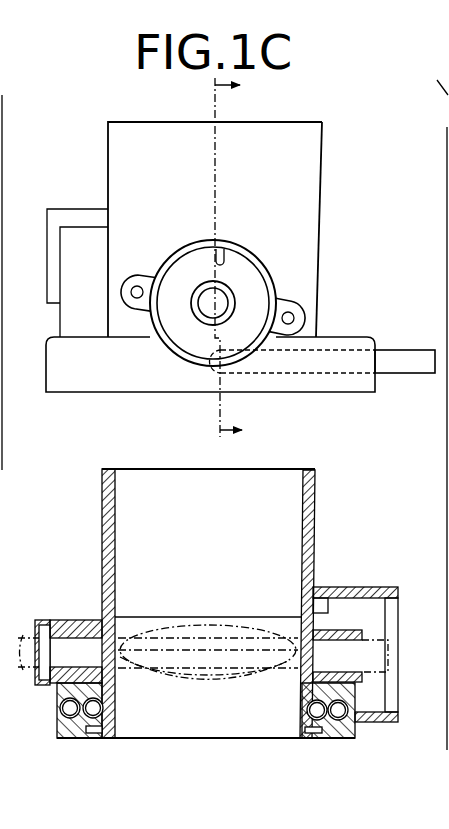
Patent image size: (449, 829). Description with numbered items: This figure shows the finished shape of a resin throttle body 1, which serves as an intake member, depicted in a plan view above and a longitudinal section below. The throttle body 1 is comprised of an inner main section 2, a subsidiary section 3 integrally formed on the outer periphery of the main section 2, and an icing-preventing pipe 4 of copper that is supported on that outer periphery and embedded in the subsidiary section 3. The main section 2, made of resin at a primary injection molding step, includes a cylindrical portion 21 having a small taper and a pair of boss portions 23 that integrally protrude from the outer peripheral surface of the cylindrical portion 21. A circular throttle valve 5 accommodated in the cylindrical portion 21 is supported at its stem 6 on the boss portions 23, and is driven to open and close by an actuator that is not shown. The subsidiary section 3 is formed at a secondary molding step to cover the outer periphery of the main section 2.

The throttle body 1 is at (100, 183).
The main section 2 is at (331, 214).
The cylindrical portion 21 is at (317, 267).
The boss portions 23 is at (232, 284).
The subsidiary section 3 is at (198, 230).
The icing-preventing pipe 4 is at (397, 360).
The throttle valve 5 is at (188, 675).
The stem 6 is at (372, 683).